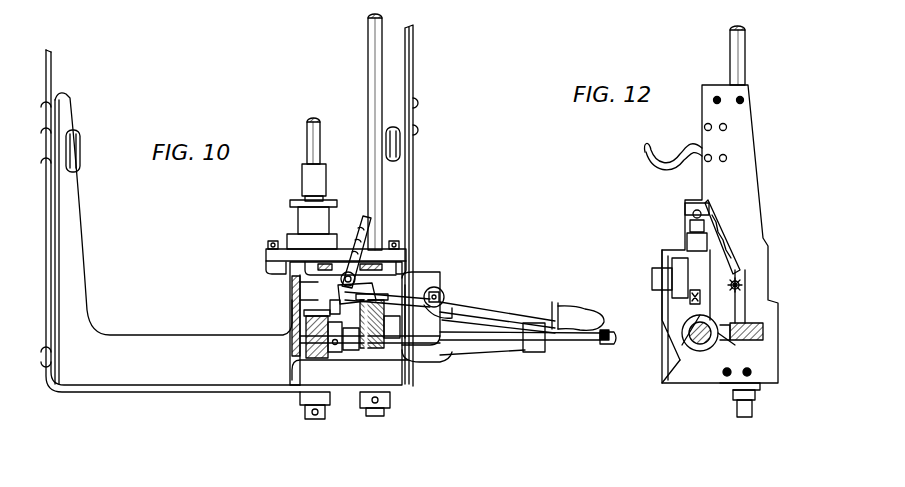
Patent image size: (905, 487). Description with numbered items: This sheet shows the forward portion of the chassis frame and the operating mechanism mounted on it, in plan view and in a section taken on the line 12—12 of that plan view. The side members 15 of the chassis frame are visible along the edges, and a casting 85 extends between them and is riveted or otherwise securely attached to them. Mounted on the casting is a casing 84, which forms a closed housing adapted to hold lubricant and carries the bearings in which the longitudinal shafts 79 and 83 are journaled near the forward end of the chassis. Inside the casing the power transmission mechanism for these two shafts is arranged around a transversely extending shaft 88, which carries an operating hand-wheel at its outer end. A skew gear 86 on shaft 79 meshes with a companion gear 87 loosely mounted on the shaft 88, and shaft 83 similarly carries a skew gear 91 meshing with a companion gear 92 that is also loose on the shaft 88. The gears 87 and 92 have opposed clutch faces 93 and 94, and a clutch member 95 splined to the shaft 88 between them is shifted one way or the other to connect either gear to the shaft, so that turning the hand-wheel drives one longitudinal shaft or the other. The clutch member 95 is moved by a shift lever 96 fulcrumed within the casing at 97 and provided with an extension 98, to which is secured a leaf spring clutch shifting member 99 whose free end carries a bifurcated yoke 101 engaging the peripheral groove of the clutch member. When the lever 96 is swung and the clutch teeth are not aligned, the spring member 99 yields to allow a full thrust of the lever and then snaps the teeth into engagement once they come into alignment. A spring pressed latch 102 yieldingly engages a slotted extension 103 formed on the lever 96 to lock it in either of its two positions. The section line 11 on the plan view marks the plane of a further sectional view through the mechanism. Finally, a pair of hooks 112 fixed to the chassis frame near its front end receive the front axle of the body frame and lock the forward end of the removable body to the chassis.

In FIG. 10, the section line 11 is at (263, 322).
In FIG. 12, the section line 11 is at (622, 318).
In FIG. 10, the section line 12 is at (393, 70).
In FIG. 10, the side members 15 is at (50, 222).
In FIG. 10, the shaft 79 is at (375, 38).
In FIG. 12, the shaft 79 is at (735, 52).
In FIG. 10, the shaft 83 is at (310, 141).
In FIG. 10, the casing 84 is at (402, 380).
In FIG. 12, the casing 84 is at (765, 358).
In FIG. 10, the casting 85 is at (148, 342).
In FIG. 10, the skew gear 86 is at (465, 357).
In FIG. 10, the companion gear 87 is at (405, 362).
In FIG. 10, the transversely extending shaft 88 is at (510, 340).
In FIG. 12, the transversely extending shaft 88 is at (683, 346).
In FIG. 10, the skew gear 91 is at (296, 375).
In FIG. 12, the skew gear 91 is at (763, 333).
In FIG. 10, the companion gear 92 is at (304, 335).
In FIG. 12, the companion gear 92 is at (715, 355).
In FIG. 10, the clutch face 93 is at (355, 398).
In FIG. 10, the clutch face 94 is at (300, 352).
In FIG. 10, the clutch member 95 is at (368, 350).
In FIG. 10, the shift lever 96 is at (530, 314).
In FIG. 12, the shift lever 96 is at (690, 298).
In FIG. 10, the fulcrum 97 is at (355, 280).
In FIG. 12, the fulcrum 97 is at (742, 268).
In FIG. 10, the extension 98 is at (367, 215).
In FIG. 12, the extension 98 is at (688, 220).
In FIG. 10, the leaf spring clutch shifting member 99 is at (330, 270).
In FIG. 12, the leaf spring clutch shifting member 99 is at (688, 235).
In FIG. 10, the bifurcated yoke 101 is at (298, 300).
In FIG. 10, the spring pressed latch 102 is at (442, 288).
In FIG. 12, the spring pressed latch 102 is at (670, 279).
In FIG. 10, the slotted extension 103 is at (446, 302).
In FIG. 12, the slotted extension 103 is at (684, 265).
In FIG. 10, the hooks 112 is at (81, 150).
In FIG. 12, the hooks 112 is at (645, 153).